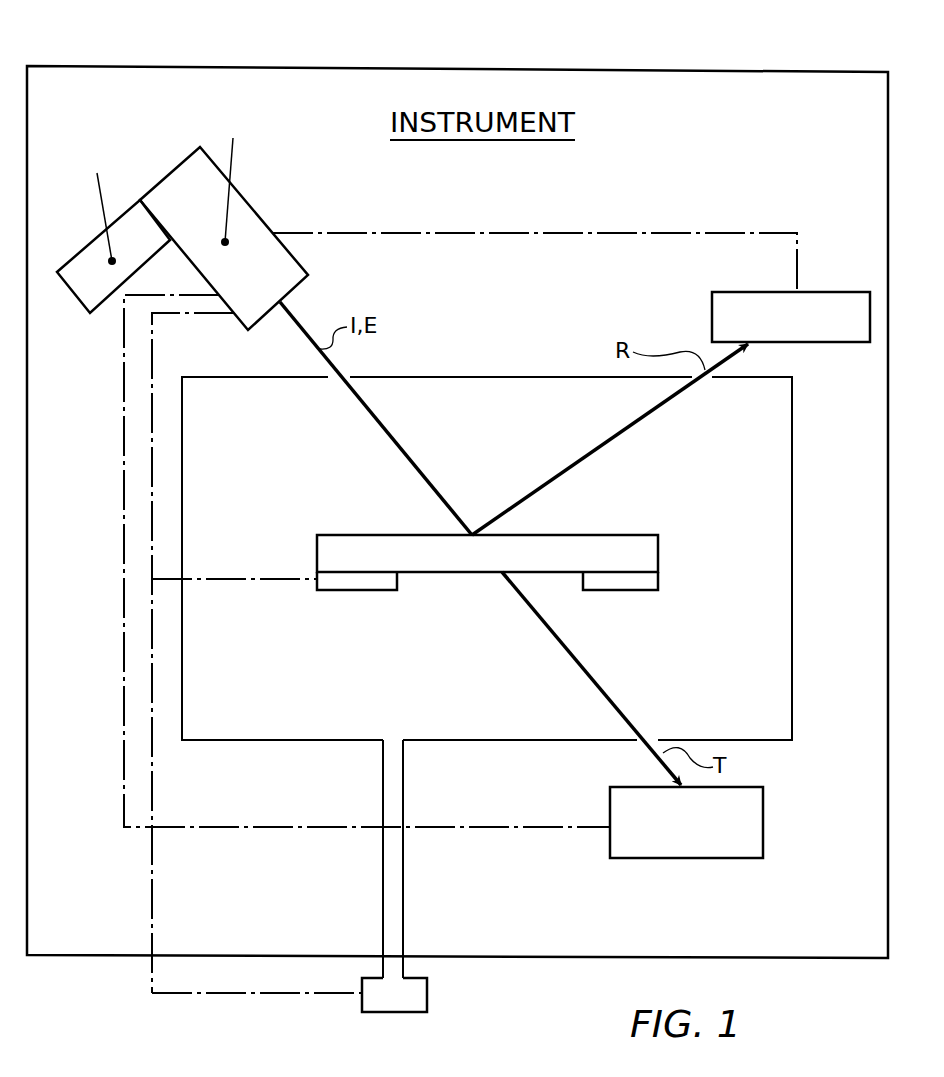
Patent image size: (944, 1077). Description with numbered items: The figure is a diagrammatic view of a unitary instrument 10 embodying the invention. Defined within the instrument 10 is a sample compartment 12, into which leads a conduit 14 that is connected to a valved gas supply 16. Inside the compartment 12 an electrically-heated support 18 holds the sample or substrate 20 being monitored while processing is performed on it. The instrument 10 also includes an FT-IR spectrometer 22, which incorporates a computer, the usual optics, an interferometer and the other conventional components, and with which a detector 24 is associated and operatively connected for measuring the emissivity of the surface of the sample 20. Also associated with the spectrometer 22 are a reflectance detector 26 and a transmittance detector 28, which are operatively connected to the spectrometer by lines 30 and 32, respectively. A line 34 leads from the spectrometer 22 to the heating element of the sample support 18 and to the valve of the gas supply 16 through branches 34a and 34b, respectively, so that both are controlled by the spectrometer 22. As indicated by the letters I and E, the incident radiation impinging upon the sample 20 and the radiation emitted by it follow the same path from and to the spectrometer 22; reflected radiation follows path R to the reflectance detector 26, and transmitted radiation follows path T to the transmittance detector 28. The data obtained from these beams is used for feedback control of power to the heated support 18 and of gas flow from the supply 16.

The instrument 10 is at (704, 66).
The sample compartment 12 is at (792, 588).
The conduit 14 is at (398, 888).
The valved gas supply 16 is at (397, 1002).
The electrically-heated support 18 is at (380, 583).
The sample 20 is at (635, 558).
The FT-IR spectrometer 22 is at (253, 218).
The detector 24 is at (87, 285).
The reflectance detector 26 is at (712, 318).
The transmittance detector 28 is at (763, 838).
The line 30 is at (510, 233).
The line 32 is at (285, 828).
The line 34 is at (152, 347).
The branch 34a is at (265, 580).
The branch 34b is at (243, 995).